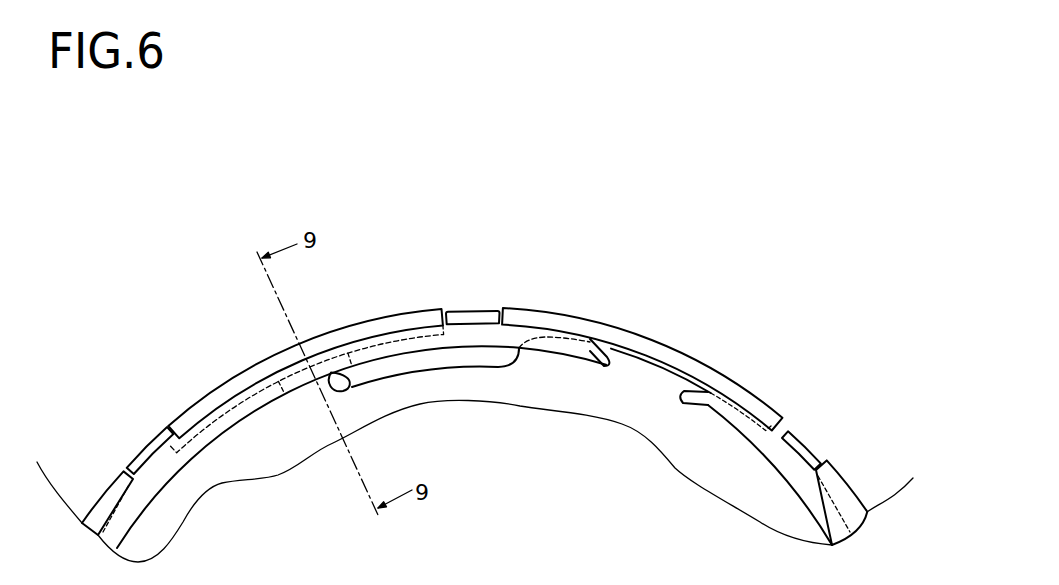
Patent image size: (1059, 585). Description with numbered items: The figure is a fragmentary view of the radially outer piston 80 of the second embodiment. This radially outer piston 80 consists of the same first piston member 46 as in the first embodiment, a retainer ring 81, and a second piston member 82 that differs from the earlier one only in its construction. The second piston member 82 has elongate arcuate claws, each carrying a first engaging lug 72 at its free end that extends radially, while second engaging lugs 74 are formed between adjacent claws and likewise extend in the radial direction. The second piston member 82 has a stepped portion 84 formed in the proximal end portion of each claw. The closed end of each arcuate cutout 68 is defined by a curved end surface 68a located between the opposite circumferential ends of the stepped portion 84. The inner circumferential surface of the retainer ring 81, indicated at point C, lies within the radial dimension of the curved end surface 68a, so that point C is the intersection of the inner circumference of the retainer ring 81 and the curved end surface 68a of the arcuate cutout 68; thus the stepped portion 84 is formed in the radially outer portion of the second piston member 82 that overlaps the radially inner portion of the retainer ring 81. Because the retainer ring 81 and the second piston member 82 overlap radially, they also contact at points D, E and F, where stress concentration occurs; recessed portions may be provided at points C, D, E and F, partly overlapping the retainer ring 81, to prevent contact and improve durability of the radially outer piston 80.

The first piston member 46 is at (402, 327).
The arcuate cutout 68 is at (484, 350).
The curved end surface 68a is at (352, 392).
The first engaging lug 72 is at (475, 317).
The second engaging lug 74 is at (142, 458).
The radially outer piston 80 is at (672, 270).
The retainer ring 81 is at (548, 345).
The second piston member 82 is at (622, 442).
The stepped portion 84 is at (292, 392).
The point C is at (333, 381).
The point D is at (523, 352).
The point E is at (591, 350).
The point F is at (702, 395).